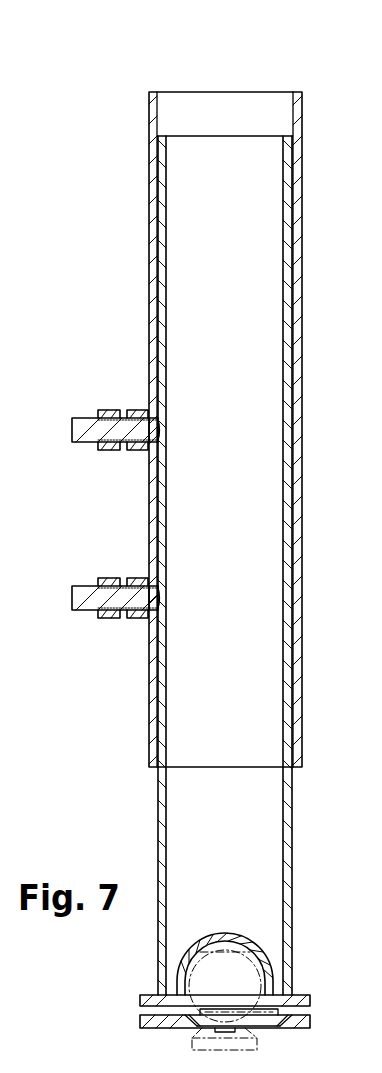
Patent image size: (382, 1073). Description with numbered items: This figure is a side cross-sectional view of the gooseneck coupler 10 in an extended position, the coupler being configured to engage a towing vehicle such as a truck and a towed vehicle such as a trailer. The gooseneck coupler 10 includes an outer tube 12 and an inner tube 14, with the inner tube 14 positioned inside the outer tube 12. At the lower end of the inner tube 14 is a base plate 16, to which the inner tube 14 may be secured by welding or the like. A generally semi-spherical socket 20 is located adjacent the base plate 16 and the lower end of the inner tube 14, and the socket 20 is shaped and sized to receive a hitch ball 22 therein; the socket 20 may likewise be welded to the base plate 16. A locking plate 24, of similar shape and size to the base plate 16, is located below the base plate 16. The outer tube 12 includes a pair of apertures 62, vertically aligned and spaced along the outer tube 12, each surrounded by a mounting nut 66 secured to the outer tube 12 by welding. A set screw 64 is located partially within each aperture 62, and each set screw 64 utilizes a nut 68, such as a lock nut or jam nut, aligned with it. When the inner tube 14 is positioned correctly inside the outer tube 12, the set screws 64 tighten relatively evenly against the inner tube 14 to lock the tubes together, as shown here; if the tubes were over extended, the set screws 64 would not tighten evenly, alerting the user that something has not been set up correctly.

The gooseneck coupler 10 is at (104, 100).
The outer tube 12 is at (303, 103).
The inner tube 14 is at (287, 840).
The base plate 16 is at (307, 1000).
The socket 20 is at (254, 953).
The hitch ball 22 is at (248, 1040).
The locking plate 24 is at (304, 1022).
The aperture 62 is at (160, 413).
The set screw 64 is at (82, 427).
The mounting nut 66 is at (132, 411).
The nut 68 is at (108, 450).